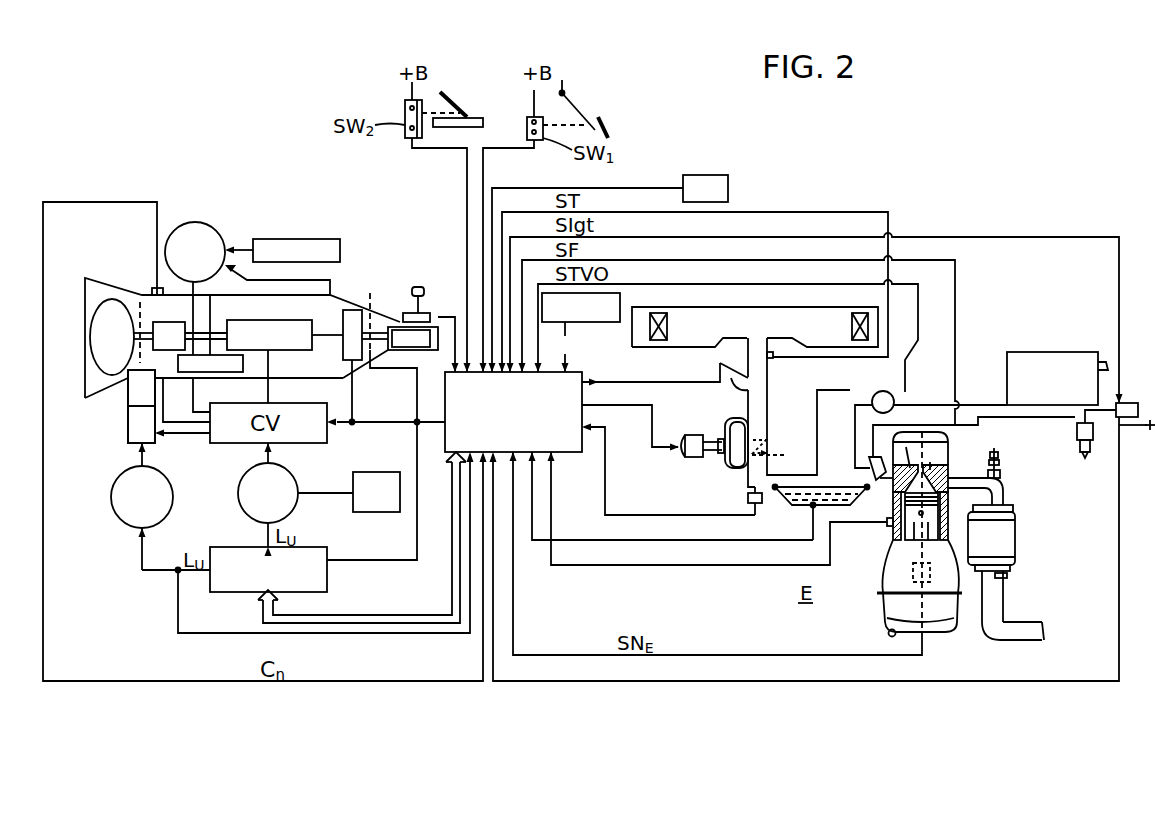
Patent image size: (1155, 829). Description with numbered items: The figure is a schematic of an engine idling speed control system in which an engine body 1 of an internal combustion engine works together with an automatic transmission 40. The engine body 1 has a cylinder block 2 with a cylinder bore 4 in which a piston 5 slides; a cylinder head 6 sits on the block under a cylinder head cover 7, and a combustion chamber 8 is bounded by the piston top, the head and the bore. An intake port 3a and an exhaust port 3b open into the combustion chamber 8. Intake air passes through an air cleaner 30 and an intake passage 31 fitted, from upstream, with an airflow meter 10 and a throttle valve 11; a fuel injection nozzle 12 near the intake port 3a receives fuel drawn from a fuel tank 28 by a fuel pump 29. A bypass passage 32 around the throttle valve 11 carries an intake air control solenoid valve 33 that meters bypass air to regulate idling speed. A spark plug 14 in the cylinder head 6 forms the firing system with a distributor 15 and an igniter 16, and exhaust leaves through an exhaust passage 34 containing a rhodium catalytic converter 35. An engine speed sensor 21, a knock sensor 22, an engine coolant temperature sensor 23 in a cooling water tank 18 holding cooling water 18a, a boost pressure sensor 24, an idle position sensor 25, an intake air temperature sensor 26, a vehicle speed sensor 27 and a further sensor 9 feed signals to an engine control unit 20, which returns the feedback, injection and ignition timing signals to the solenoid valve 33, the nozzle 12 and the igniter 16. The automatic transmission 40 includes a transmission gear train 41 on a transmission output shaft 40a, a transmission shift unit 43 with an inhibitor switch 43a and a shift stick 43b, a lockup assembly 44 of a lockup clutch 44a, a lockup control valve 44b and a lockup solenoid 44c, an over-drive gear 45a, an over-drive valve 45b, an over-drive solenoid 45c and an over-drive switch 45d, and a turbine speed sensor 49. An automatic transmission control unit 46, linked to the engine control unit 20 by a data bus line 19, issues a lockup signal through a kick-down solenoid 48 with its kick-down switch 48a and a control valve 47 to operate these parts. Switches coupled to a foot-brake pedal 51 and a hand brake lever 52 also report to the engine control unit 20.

The engine body 1 is at (886, 550).
The cylinder block 2 is at (897, 583).
The intake port 3a is at (874, 473).
The exhaust port 3b is at (1005, 488).
The cylinder bore 4 is at (908, 540).
The piston 5 is at (940, 513).
The cylinder head 6 is at (907, 464).
The cylinder head cover 7 is at (935, 452).
The combustion chamber 8 is at (931, 434).
The sensor 9 is at (728, 183).
The airflow meter 10 is at (752, 383).
The throttle valve 11 is at (764, 441).
The fuel injection nozzle 12 is at (872, 462).
The spark plug 14 is at (932, 467).
The distributor 15 is at (1076, 444).
The igniter 16 is at (1130, 402).
The cooling water tank 18 is at (783, 500).
The cooling water 18a is at (833, 507).
The data bus line 19 is at (388, 615).
The engine control unit 20 is at (570, 453).
The engine speed sensor 21 is at (913, 582).
The knock sensor 22 is at (888, 519).
The engine coolant temperature sensor 23 is at (812, 507).
The boost pressure sensor 24 is at (748, 499).
The idle position sensor 25 is at (783, 459).
The intake air temperature sensor 26 is at (775, 357).
The vehicle speed sensor 27 is at (597, 324).
The fuel tank 28 is at (1044, 352).
The fuel pump 29 is at (893, 396).
The air cleaner 30 is at (797, 307).
The intake passage 31 is at (744, 411).
The bypass passage 32 is at (725, 430).
The intake air control solenoid valve 33 is at (692, 457).
The exhaust passage 34 is at (1013, 509).
The rhodium catalytic converter 35 is at (1015, 547).
The automatic transmission 40 is at (128, 285).
The transmission output shaft 40a is at (321, 340).
The transmission gear train 41 is at (266, 320).
The transmission shift unit 43 is at (401, 310).
The inhibitor switch 43a is at (434, 308).
The shift stick 43b is at (418, 287).
The lockup assembly 44 is at (88, 410).
The lockup clutch 44a is at (130, 398).
The lockup control valve 44b is at (129, 432).
The lockup solenoid 44c is at (118, 483).
The over-drive gear 45a is at (168, 322).
The over-drive valve 45b is at (225, 372).
The over-drive solenoid 45c is at (208, 224).
The over-drive switch 45d is at (308, 239).
The automatic transmission control unit 46 is at (328, 562).
The control valve 47 is at (332, 420).
The kick-down solenoid 48 is at (296, 478).
The kick-down switch 48a is at (372, 472).
The turbine speed sensor 49 is at (155, 288).
The foot-brake pedal 51 is at (610, 122).
The hand brake lever 52 is at (458, 112).